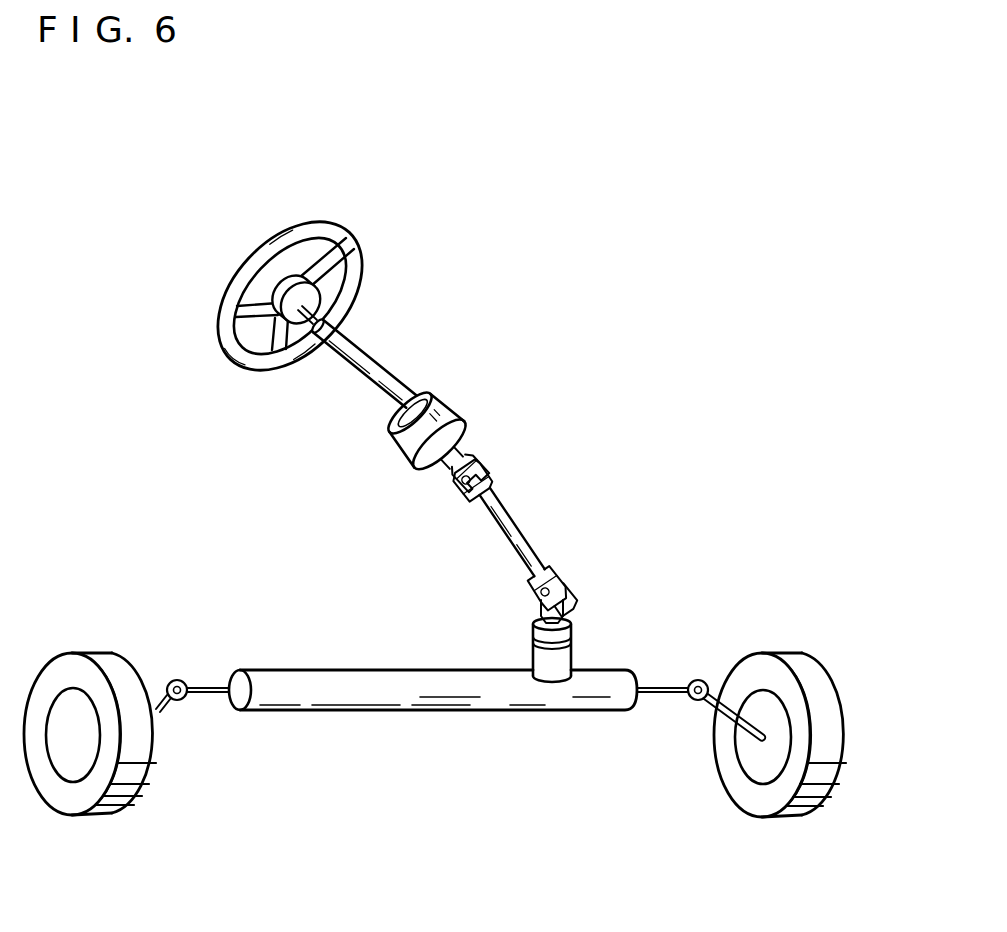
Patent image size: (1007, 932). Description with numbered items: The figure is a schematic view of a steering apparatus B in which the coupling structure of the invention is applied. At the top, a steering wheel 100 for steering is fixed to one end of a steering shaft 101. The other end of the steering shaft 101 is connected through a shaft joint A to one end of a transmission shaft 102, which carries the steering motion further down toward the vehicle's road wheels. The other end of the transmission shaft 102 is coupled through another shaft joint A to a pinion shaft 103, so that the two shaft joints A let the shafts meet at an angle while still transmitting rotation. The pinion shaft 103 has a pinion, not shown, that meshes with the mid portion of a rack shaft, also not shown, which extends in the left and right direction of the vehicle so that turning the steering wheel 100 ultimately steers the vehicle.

The steering wheel 100 is at (362, 250).
The steering shaft 101 is at (347, 369).
The transmission shaft 102 is at (522, 518).
The pinion shaft 103 is at (574, 640).
The shaft joint A is at (473, 447).
The steering apparatus B is at (426, 386).